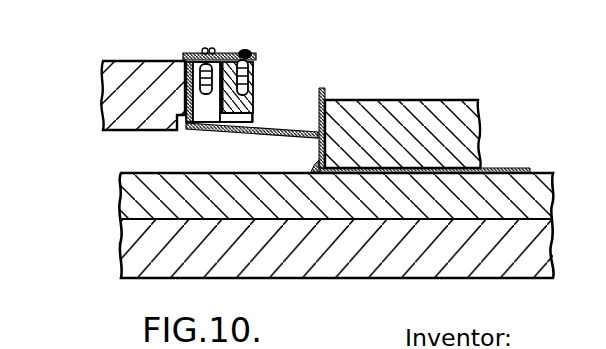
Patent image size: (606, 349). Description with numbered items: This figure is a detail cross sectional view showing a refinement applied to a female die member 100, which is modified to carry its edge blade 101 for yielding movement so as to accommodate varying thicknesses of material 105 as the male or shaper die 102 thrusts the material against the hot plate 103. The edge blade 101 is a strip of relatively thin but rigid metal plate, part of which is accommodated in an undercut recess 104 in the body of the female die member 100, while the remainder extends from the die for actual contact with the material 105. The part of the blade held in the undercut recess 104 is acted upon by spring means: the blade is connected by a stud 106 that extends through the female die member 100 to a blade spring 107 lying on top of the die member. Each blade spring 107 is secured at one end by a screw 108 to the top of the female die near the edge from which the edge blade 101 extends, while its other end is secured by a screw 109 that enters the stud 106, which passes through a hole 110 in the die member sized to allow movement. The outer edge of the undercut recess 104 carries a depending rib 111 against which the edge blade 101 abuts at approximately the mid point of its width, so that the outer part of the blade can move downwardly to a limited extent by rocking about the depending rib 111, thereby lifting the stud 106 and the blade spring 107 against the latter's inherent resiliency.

The female die member 100 is at (122, 88).
The edge blade 101 is at (283, 134).
The male or shaper die 102 is at (417, 132).
The hot plate 103 is at (508, 197).
The undercut recess 104 is at (200, 135).
The material 105 is at (318, 158).
The stud 106 is at (202, 98).
The blade spring 107 is at (222, 56).
The screw 108 is at (248, 51).
The screw 109 is at (208, 51).
The hole 110 is at (111, 115).
The depending rib 111 is at (251, 118).